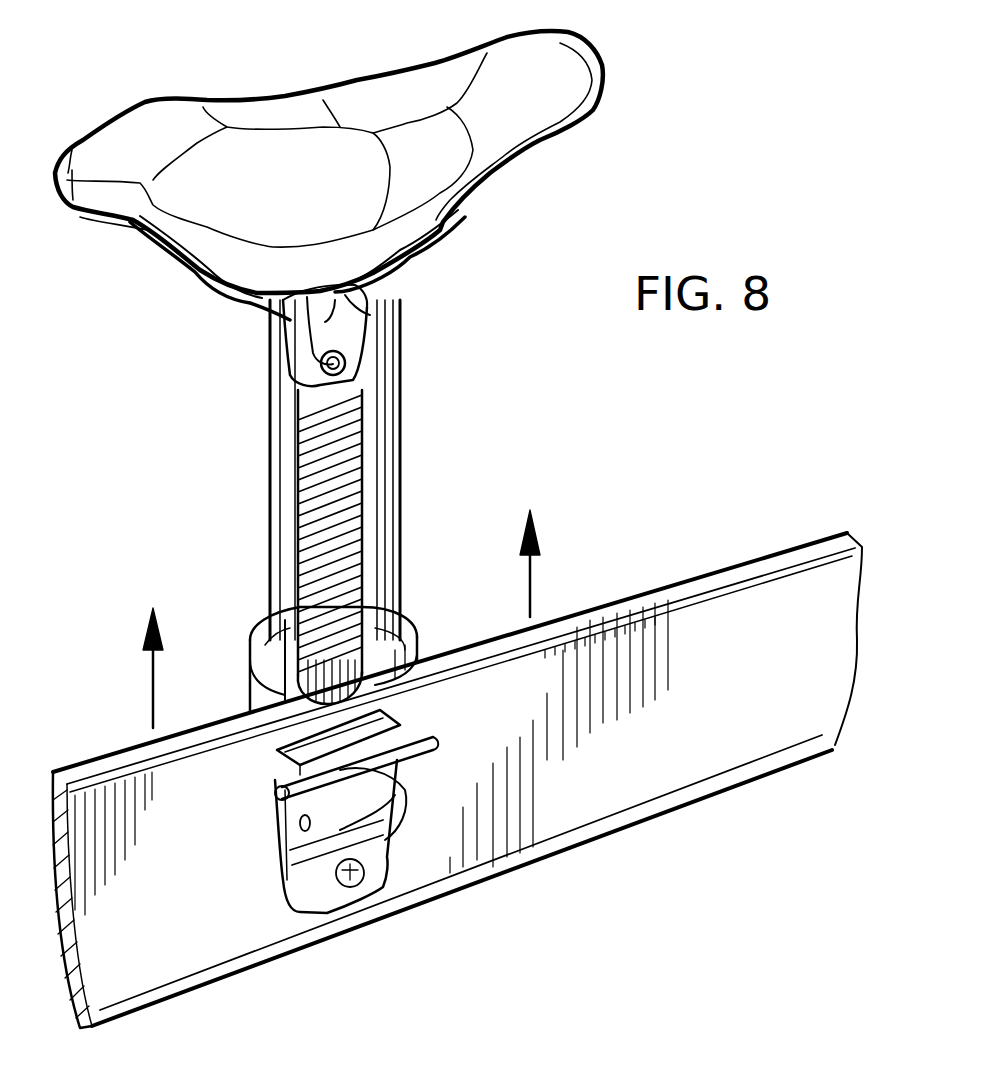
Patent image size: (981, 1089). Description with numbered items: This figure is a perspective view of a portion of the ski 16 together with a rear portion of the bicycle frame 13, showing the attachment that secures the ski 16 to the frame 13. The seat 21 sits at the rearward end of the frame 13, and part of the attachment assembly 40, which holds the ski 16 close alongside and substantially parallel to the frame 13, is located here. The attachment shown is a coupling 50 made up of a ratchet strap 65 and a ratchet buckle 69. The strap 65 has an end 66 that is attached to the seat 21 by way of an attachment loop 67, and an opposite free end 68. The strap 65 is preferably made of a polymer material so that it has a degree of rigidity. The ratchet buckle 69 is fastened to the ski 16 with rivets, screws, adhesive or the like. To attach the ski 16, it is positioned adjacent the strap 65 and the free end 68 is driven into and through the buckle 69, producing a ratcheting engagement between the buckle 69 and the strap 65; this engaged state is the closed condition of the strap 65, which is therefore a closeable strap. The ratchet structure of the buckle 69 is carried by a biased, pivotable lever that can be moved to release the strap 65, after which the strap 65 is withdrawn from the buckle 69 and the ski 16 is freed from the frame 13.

The seat 21 is at (547, 43).
The attachment assembly 40 is at (196, 453).
The attachment loop 67 is at (343, 328).
The end 66 is at (297, 370).
The ratchet strap 65 is at (347, 490).
The free end 68 is at (250, 693).
The frame 13 is at (417, 642).
The coupling 50 is at (412, 590).
The ski 16 is at (710, 612).
The ratchet buckle 69 is at (440, 780).